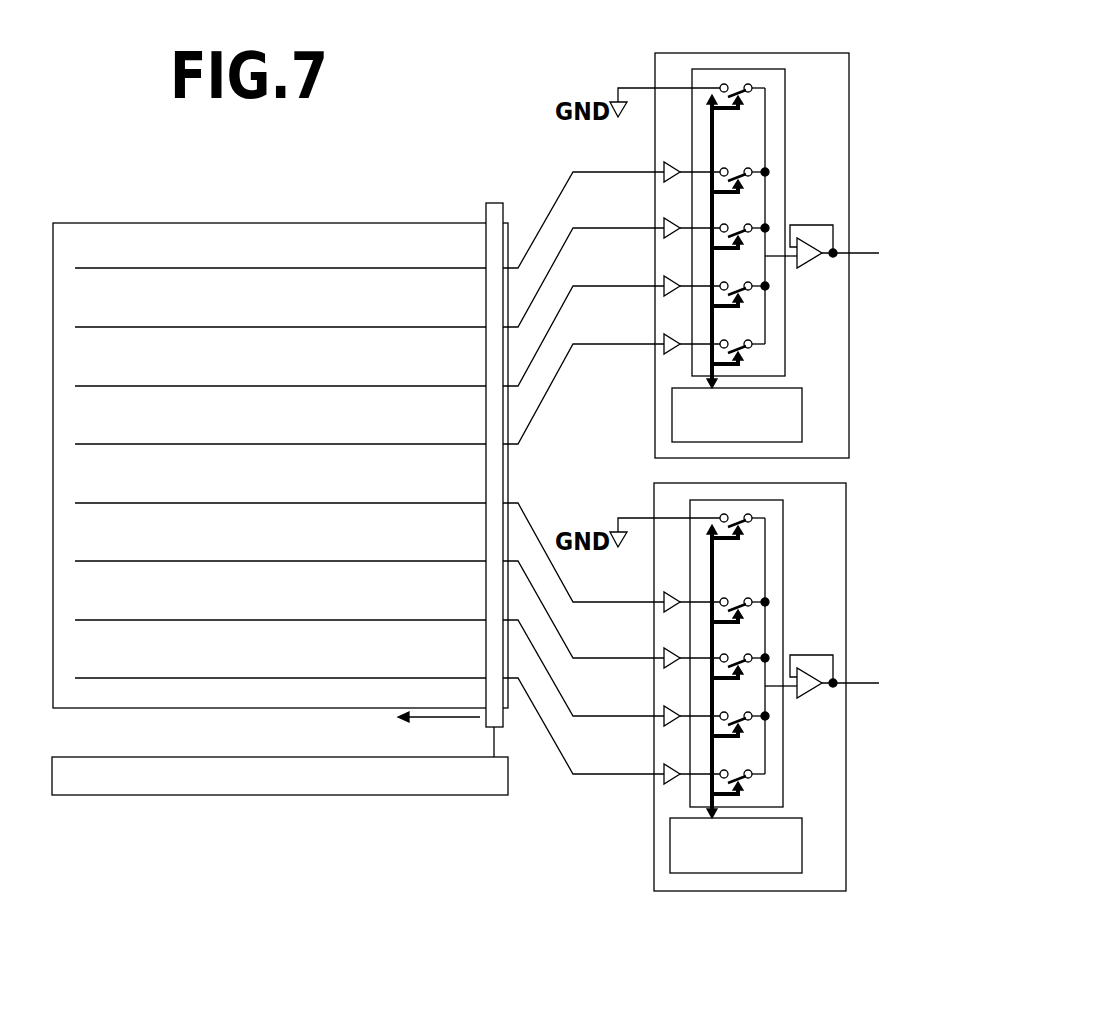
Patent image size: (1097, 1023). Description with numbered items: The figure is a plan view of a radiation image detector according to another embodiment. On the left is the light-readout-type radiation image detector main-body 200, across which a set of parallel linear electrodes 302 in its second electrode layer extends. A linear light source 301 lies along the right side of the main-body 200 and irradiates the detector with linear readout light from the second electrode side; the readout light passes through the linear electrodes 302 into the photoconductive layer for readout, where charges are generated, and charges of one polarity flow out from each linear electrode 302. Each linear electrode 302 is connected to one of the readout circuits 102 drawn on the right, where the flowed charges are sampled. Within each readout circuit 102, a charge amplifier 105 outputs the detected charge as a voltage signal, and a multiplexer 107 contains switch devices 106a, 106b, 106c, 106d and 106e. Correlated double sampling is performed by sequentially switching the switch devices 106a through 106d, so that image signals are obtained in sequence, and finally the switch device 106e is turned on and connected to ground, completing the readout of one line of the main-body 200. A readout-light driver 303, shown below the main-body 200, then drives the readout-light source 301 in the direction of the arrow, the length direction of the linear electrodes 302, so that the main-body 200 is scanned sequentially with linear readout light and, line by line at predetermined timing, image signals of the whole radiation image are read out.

The light-readout-type radiation image detector main-body 200 is at (303, 222).
The linear electrode 302 is at (214, 267).
The linear light source 301 is at (497, 202).
The readout-light driver 303 is at (451, 796).
The readout circuit 102 is at (826, 53).
The multiplexer 107 is at (765, 69).
The charge amplifier 105 is at (675, 350).
The switch device 106a is at (733, 340).
The switch device 106b is at (733, 282).
The switch device 106c is at (733, 224).
The switch device 106d is at (733, 168).
The switch device 106e is at (735, 84).